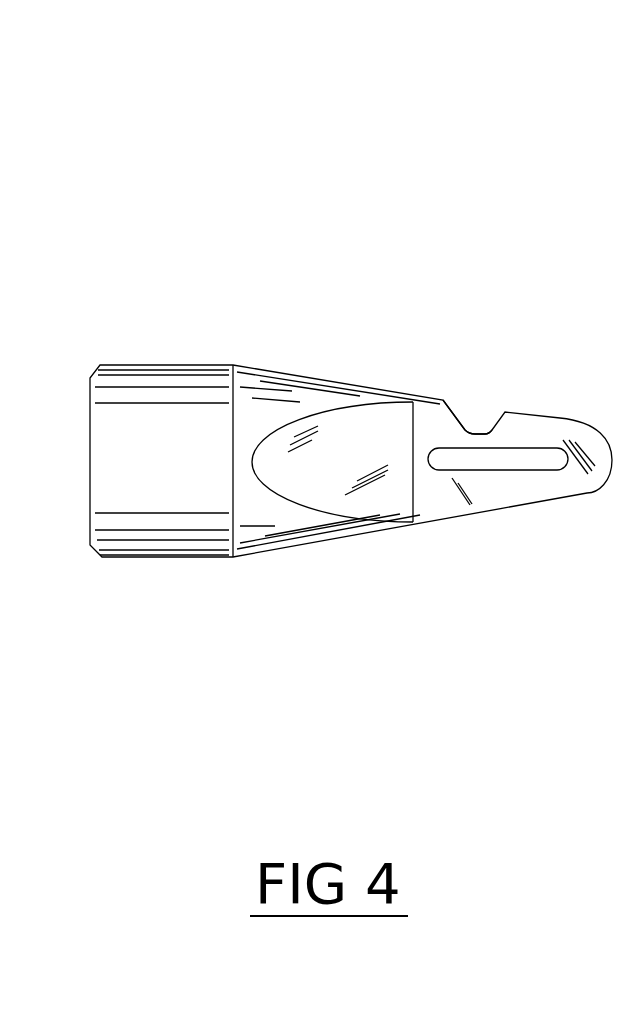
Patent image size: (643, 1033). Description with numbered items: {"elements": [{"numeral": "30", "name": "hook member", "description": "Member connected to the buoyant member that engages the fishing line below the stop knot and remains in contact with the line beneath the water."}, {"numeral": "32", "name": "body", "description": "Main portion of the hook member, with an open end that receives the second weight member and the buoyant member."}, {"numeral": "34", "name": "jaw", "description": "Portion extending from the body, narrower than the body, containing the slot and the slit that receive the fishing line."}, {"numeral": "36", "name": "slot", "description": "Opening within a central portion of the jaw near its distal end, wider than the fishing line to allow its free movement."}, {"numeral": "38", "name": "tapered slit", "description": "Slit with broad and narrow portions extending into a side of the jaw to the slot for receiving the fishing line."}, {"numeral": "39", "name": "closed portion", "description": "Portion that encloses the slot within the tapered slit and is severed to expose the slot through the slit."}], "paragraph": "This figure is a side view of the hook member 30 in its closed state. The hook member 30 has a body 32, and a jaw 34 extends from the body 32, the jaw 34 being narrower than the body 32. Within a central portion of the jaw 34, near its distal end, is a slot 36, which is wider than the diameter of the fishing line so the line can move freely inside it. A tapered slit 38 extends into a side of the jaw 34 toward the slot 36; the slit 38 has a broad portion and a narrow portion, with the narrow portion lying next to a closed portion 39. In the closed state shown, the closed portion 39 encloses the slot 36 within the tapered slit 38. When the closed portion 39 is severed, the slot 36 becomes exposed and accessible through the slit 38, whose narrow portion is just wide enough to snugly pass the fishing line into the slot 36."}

The nozzle tip assembly 30 is at (167, 365).
The cylindrical collar 32 is at (128, 528).
The tapered nose 34 is at (432, 503).
The slot 36 is at (535, 472).
The notch flank 38 is at (463, 415).
The notch 39 is at (480, 433).